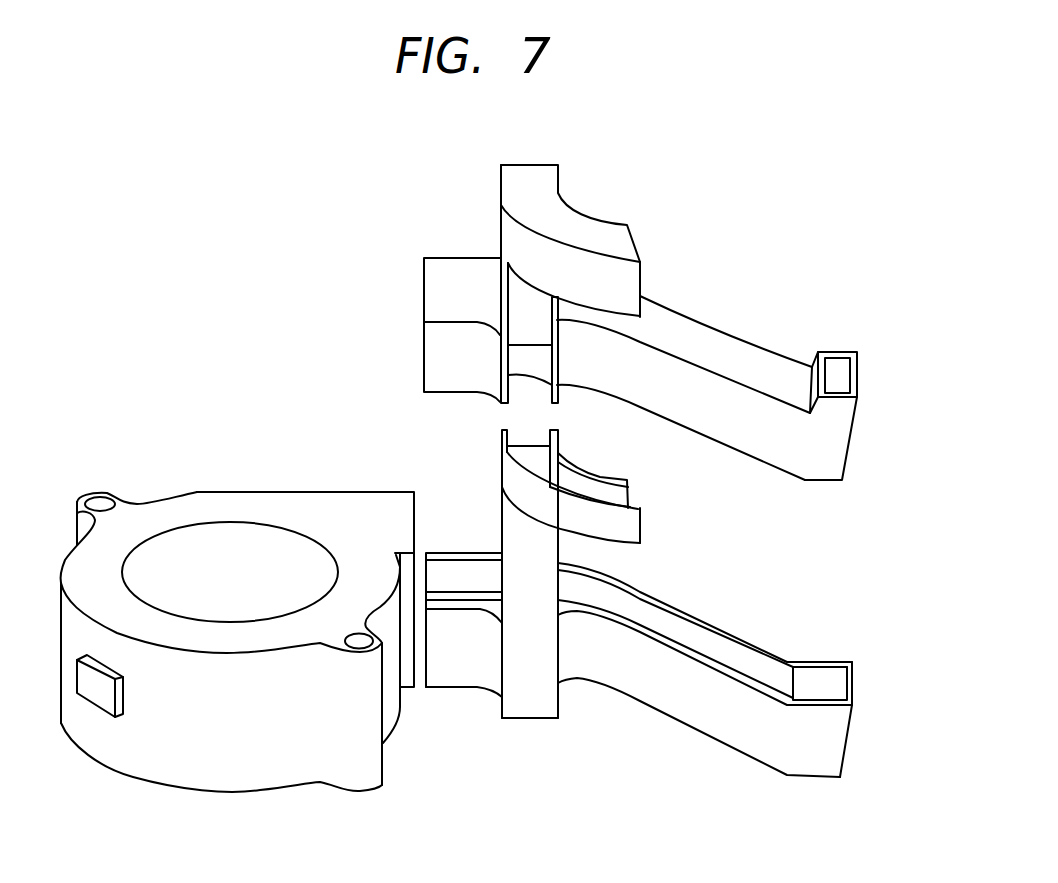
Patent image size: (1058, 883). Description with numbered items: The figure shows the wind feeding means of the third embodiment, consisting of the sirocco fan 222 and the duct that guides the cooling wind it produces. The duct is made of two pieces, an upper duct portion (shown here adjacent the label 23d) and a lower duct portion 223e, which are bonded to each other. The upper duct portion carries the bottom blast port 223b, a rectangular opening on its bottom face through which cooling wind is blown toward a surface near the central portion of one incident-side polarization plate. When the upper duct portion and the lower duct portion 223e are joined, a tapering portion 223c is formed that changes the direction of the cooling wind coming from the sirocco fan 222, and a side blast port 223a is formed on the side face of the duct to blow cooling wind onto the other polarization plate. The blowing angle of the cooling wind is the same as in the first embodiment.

The sirocco fan 222 is at (225, 512).
The bent duct portion 23d is at (602, 277).
The side blast port 223a is at (640, 280).
The bottom blast port 223b is at (833, 352).
The tapering portion 223c is at (592, 502).
The lower duct portion 223e is at (617, 676).